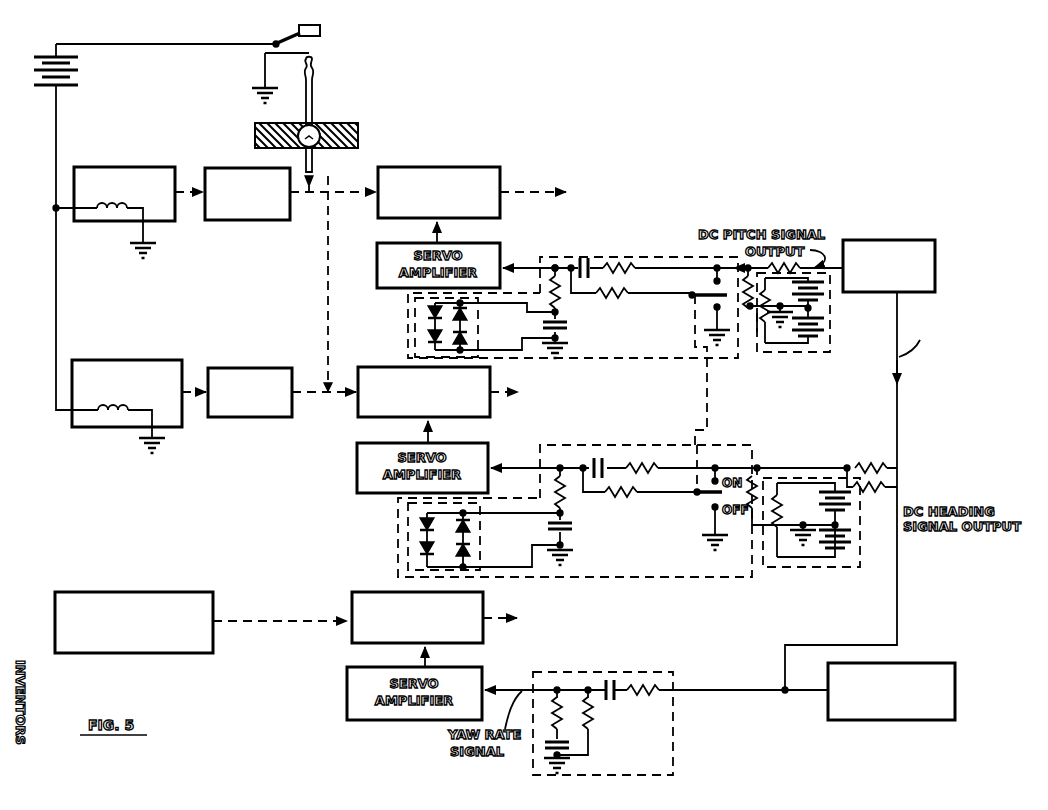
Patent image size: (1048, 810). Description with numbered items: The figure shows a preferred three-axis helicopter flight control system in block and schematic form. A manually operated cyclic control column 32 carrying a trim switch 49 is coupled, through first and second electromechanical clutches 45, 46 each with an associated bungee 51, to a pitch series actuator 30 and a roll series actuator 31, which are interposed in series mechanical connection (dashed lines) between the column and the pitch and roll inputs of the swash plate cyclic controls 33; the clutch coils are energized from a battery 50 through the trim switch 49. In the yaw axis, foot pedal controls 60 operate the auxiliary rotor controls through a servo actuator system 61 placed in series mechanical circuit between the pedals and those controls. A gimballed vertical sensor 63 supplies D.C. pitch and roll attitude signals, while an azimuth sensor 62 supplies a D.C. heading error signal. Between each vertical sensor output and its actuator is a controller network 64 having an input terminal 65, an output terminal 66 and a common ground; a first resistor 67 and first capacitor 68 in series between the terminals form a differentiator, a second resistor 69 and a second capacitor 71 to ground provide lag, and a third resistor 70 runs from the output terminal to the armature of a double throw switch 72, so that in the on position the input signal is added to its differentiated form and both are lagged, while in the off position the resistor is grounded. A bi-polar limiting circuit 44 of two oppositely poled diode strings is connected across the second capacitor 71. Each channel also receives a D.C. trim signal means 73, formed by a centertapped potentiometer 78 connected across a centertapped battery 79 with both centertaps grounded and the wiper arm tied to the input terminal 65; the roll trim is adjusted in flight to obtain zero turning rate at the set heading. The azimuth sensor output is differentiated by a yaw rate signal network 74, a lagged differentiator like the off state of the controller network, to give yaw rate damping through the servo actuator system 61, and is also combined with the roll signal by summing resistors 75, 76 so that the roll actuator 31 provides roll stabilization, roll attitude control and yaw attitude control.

The pitch series actuator 30 is at (396, 207).
The roll series actuator 31 is at (405, 378).
The cyclic control column 32 is at (324, 103).
The swash plate cyclic controls 33 is at (839, 202).
The bi-polar limiting circuit 44 is at (416, 320).
The first electromechanical clutch 45 is at (108, 167).
The second electromechanical clutch 46 is at (103, 360).
The trim switch 49 is at (322, 30).
The battery 50 is at (36, 61).
The bungee 51 is at (258, 200).
The foot pedal controls 60 is at (180, 600).
The servo actuator system 61 is at (378, 592).
The azimuth sensor 62 is at (937, 698).
The vertical sensor 63 is at (884, 241).
The controller network 64 is at (603, 257).
The input terminal 65 is at (710, 270).
The output terminal 66 is at (552, 270).
The first resistor 67 is at (612, 265).
The first capacitor 68 is at (584, 258).
The second resistor 69 is at (560, 293).
The third resistor 70 is at (622, 297).
The second capacitor 71 is at (569, 327).
The double throw switch 72 is at (704, 301).
The D.C. trim signal means 73 is at (836, 310).
The yaw rate signal network 74 is at (656, 703).
The summing resistor 75 is at (864, 465).
The summing resistor 76 is at (856, 491).
The centertapped potentiometer 78 is at (760, 334).
The centertapped battery 79 is at (810, 331).